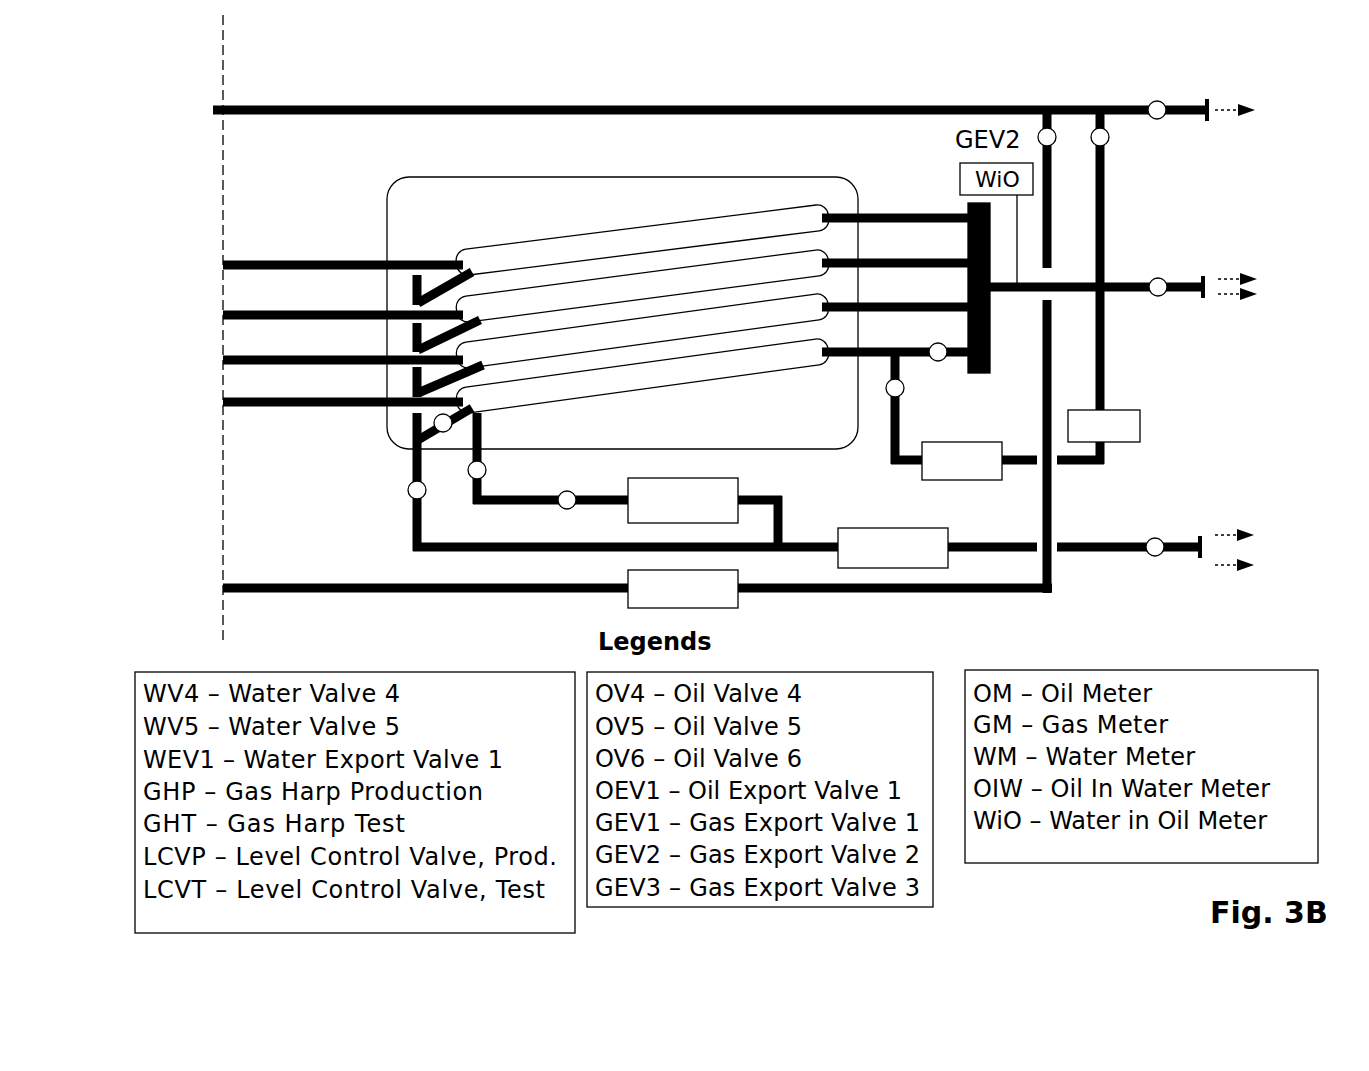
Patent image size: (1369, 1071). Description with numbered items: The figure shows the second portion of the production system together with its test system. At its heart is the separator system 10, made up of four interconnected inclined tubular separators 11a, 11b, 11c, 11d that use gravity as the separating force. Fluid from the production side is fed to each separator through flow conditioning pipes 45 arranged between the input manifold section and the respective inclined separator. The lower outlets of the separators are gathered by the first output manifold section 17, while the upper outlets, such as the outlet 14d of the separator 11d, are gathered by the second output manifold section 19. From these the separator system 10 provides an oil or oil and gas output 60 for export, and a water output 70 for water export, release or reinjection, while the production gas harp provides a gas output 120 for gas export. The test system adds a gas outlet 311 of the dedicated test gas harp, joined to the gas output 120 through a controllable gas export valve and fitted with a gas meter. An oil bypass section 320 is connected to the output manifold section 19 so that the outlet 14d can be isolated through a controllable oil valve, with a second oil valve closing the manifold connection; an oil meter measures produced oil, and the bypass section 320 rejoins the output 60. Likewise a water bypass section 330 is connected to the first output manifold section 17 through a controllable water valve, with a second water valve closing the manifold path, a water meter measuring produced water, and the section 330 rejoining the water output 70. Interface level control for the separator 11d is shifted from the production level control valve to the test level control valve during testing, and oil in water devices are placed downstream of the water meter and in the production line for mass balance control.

The separator system 10 is at (372, 184).
The first output manifold section 17 is at (430, 280).
The gas output 120 is at (726, 105).
The flow conditioning pipes 45 is at (296, 262).
The inclined tubular separator 11a is at (593, 242).
The inclined tubular separator 11b is at (567, 297).
The inclined tubular separator 11c is at (567, 345).
The inclined tubular separator 11d is at (717, 368).
The second output manifold section 19 is at (967, 203).
The oil or oil and gas output 60 is at (1193, 280).
The water output 70 is at (1185, 543).
The oil bypass section 320 is at (1103, 395).
The outlet 14d is at (878, 357).
The gas outlet 311 is at (418, 593).
The water bypass section 330 is at (510, 503).